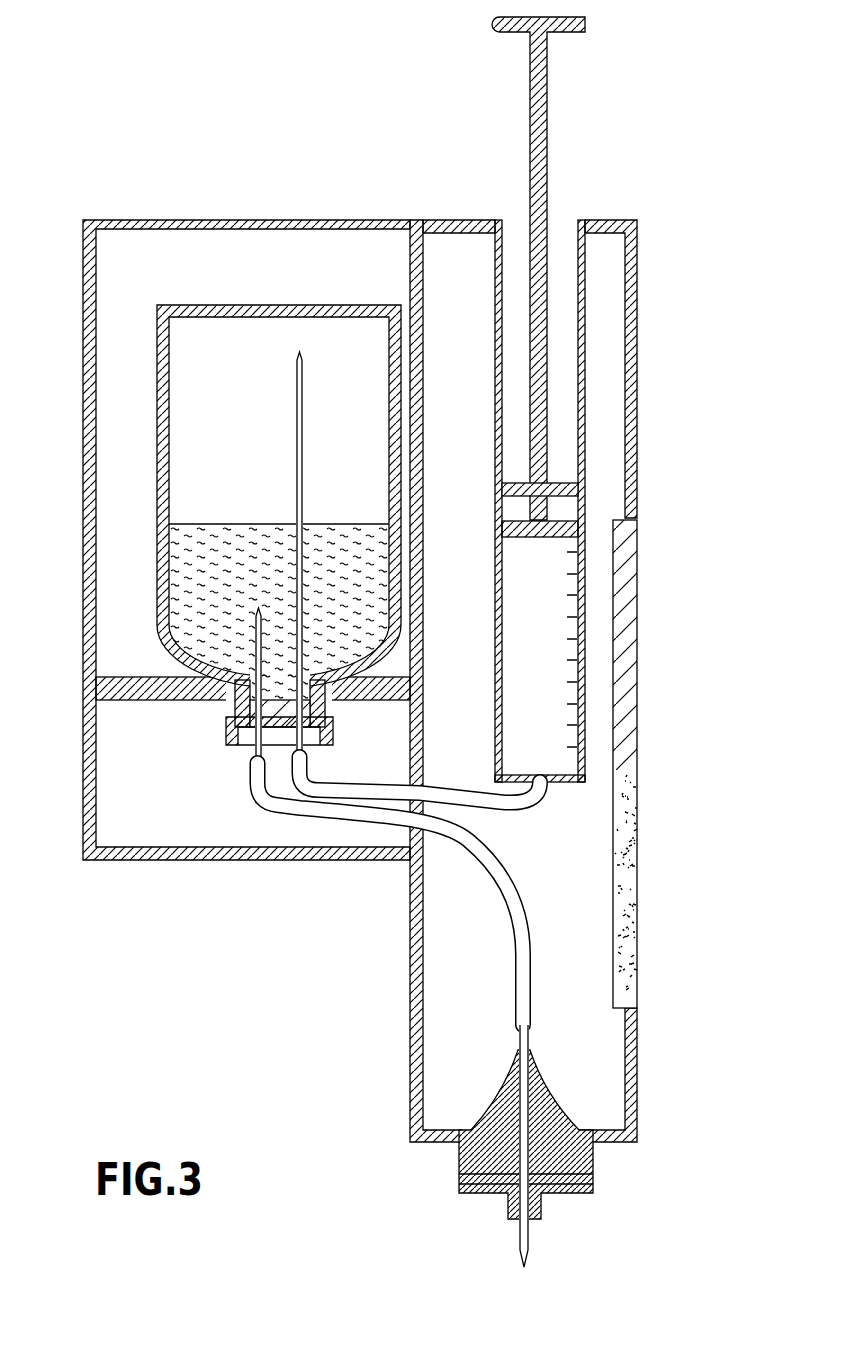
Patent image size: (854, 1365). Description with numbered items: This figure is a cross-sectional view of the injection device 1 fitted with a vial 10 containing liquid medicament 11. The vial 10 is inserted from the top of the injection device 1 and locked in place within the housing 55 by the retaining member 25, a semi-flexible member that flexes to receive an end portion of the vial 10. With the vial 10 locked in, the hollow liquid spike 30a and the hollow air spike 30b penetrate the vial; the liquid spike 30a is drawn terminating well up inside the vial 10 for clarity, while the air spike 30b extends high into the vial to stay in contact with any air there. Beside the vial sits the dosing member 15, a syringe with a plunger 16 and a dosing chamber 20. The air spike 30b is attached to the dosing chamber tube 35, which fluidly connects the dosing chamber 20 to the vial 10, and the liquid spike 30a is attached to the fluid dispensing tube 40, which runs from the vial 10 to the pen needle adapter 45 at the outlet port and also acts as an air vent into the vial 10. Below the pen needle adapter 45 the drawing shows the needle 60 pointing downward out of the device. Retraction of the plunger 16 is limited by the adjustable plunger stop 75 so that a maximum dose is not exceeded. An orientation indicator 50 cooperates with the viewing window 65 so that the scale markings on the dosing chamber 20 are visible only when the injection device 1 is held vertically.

The injection device 1 is at (84, 187).
The vial 10 is at (205, 305).
The medicament 11 is at (178, 546).
The dosing member 15 is at (587, 352).
The plunger 16 is at (585, 27).
The dosing chamber 20 is at (565, 650).
The retaining member 25 is at (117, 677).
The liquid spike 30a is at (252, 640).
The air spike 30b is at (303, 392).
The dosing chamber tube 35 is at (517, 810).
The fluid dispensing tube 40 is at (505, 880).
The pen needle adapter 45 is at (594, 1175).
The orientation indicator 50 is at (670, 788).
The housing 55 is at (640, 243).
The injection needle 60 is at (470, 1195).
The viewing window 65 is at (637, 565).
The plunger stop 75 is at (570, 484).